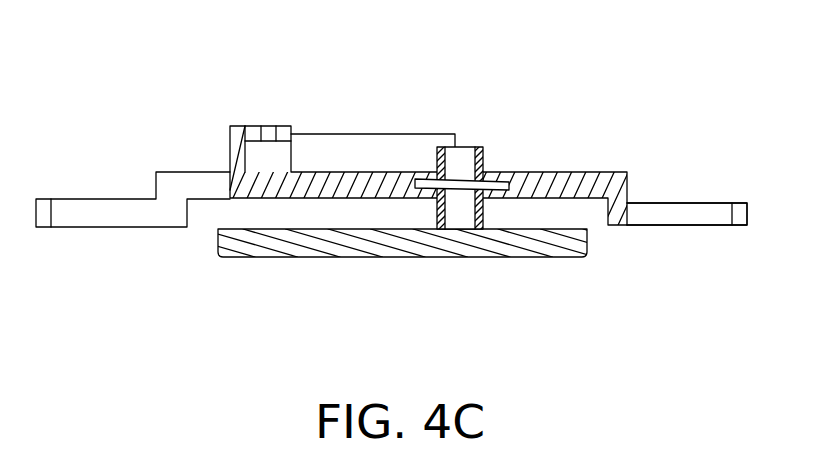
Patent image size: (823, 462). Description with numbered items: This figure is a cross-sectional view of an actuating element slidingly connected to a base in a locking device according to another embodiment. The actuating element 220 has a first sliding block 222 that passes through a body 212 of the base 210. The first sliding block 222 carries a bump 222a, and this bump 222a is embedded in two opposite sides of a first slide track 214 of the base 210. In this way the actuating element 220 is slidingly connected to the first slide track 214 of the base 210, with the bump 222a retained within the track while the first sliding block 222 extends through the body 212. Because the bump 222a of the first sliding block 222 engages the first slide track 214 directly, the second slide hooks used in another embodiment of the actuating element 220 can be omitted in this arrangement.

The base 210 is at (700, 114).
The body 212 is at (617, 222).
The first slide track 214 is at (432, 174).
The actuating element 220 is at (528, 245).
The first sliding block 222 is at (483, 148).
The bump 222a is at (492, 187).